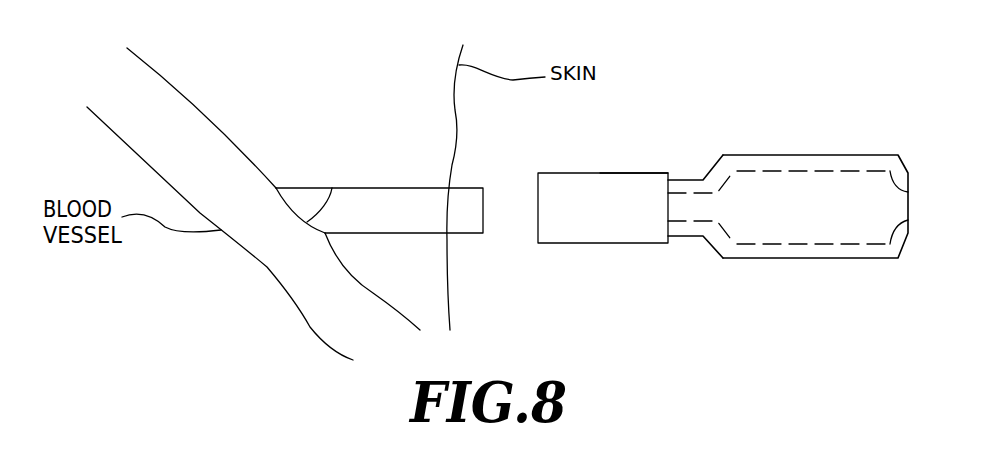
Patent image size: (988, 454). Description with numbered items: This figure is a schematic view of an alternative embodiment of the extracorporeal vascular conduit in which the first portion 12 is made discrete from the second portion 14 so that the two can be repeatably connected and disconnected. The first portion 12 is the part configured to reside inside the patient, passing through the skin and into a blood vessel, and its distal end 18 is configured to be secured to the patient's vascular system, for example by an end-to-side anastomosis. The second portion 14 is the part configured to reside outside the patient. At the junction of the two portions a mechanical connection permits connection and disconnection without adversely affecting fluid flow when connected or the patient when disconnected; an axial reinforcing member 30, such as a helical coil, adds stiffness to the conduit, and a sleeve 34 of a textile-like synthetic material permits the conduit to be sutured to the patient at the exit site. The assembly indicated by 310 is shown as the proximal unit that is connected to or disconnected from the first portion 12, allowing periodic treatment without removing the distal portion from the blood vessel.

The first portion 12 is at (373, 187).
The distal end 18 is at (332, 188).
The axial reinforcing member 30 is at (538, 208).
The sleeve 34 is at (633, 173).
The second portion 14 is at (687, 180).
The blood collection device 310 is at (785, 118).